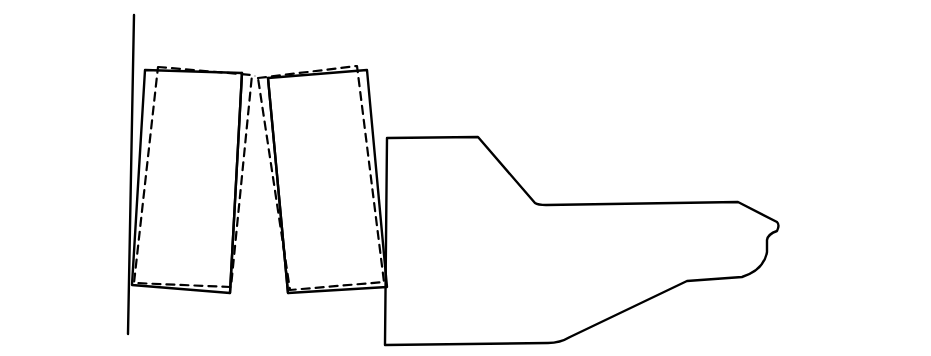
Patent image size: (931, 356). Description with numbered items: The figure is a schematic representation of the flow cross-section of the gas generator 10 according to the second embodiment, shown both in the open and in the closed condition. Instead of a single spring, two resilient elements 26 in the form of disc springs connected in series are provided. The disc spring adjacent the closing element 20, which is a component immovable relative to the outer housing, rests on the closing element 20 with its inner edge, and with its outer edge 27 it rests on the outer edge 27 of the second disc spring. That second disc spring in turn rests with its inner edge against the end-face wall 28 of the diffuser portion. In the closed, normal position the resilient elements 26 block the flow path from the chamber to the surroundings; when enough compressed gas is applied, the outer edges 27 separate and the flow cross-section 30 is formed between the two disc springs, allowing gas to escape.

The gas generator 10 is at (600, 50).
The closing element 20 is at (493, 183).
The resilient elements 26 is at (183, 136).
The outer edge 27 is at (255, 72).
The end-face wall 28 is at (131, 211).
The flow cross-section 30 is at (255, 46).